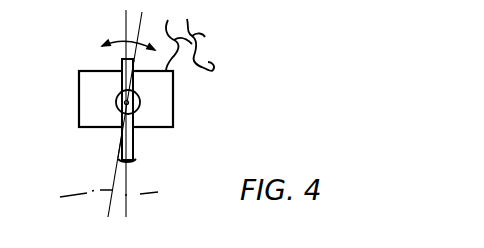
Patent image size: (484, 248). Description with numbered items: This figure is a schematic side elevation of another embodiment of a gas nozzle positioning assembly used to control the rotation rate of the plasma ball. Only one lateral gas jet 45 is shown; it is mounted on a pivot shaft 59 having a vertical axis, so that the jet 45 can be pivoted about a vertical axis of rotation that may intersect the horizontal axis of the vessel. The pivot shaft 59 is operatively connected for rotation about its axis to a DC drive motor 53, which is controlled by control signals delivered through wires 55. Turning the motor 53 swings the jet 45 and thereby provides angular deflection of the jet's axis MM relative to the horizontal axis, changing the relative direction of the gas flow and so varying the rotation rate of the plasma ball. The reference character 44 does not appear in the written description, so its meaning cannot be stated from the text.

The lateral gas jet 45 is at (120, 78).
The DC drive motor 53 is at (173, 120).
The wires 55 is at (188, 35).
The pivot shaft 59 is at (118, 110).
The pivot axis line 44 is at (151, 113).
The offset axis MM is at (89, 200).